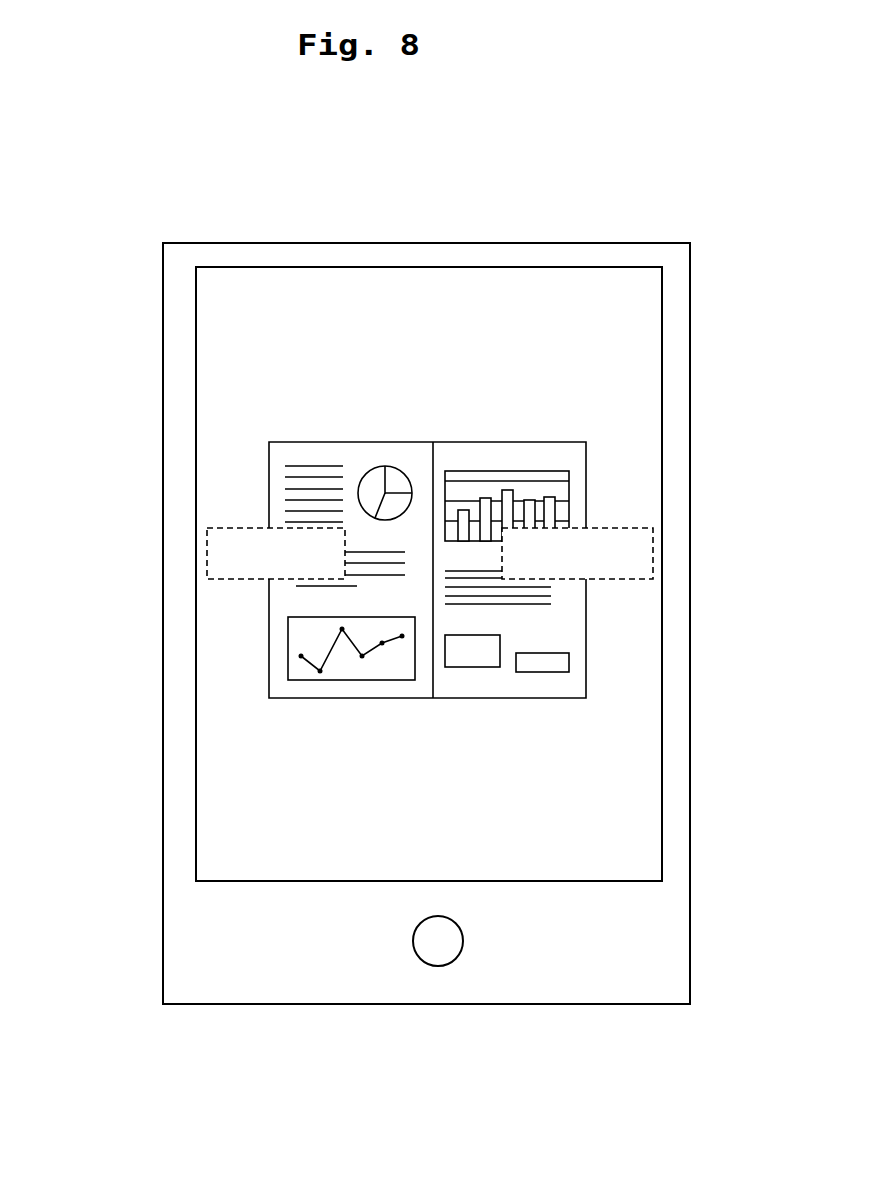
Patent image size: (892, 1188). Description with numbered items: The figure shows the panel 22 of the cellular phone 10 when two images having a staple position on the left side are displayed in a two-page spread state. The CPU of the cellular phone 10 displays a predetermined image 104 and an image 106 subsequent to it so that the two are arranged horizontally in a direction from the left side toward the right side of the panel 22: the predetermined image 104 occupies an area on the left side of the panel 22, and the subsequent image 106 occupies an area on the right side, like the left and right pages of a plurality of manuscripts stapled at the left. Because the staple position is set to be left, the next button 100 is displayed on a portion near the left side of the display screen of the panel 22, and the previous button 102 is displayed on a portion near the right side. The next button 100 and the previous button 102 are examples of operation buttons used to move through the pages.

The cellular phone 10 is at (552, 213).
The panel 22 is at (458, 266).
The next button 100 is at (207, 556).
The previous button 102 is at (653, 553).
The predetermined image 104 is at (354, 442).
The subsequent image 106 is at (505, 442).